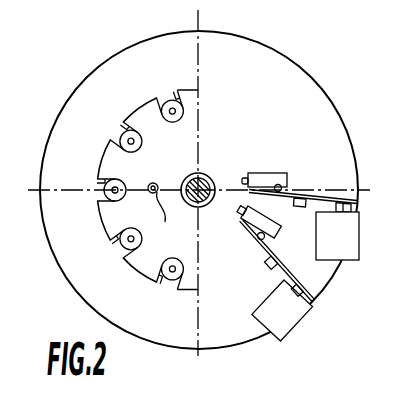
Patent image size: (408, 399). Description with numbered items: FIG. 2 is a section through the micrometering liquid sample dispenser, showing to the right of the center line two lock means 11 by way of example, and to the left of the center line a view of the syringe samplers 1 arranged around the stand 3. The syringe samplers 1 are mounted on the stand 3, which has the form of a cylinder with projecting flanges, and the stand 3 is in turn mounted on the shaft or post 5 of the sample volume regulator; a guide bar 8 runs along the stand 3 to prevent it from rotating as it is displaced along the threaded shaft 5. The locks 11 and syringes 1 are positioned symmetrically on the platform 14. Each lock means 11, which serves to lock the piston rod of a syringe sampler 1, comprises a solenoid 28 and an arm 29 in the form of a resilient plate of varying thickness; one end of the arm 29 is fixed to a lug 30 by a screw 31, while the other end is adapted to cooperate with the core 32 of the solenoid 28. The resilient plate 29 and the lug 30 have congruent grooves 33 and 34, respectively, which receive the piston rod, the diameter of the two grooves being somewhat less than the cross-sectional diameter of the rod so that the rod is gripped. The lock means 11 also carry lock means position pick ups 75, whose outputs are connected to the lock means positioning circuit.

The syringe sampler 1 is at (163, 287).
The stand 3 is at (115, 218).
The shaft or post 5 is at (206, 173).
The guide bar 8 is at (163, 212).
The lock means 11 is at (287, 247).
The platform 14 is at (352, 148).
The solenoid 28 is at (288, 318).
The arm 29 is at (296, 279).
The lug 30 is at (263, 191).
The screw 31 is at (245, 204).
The core 32 is at (311, 297).
The groove 33 is at (275, 275).
The groove 34 is at (272, 240).
The lock means position pick up 75 is at (269, 268).